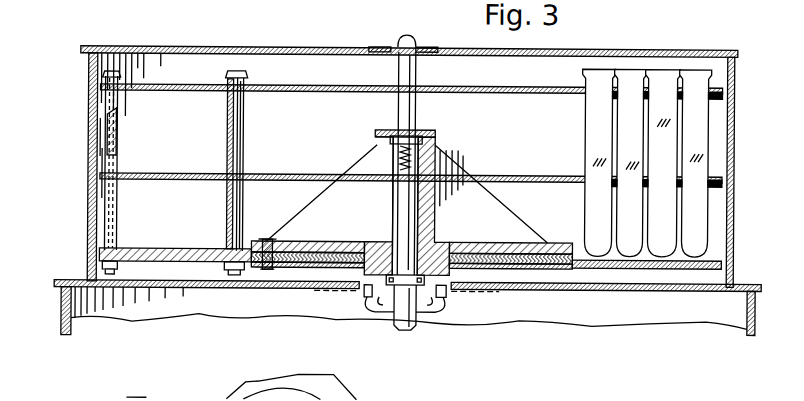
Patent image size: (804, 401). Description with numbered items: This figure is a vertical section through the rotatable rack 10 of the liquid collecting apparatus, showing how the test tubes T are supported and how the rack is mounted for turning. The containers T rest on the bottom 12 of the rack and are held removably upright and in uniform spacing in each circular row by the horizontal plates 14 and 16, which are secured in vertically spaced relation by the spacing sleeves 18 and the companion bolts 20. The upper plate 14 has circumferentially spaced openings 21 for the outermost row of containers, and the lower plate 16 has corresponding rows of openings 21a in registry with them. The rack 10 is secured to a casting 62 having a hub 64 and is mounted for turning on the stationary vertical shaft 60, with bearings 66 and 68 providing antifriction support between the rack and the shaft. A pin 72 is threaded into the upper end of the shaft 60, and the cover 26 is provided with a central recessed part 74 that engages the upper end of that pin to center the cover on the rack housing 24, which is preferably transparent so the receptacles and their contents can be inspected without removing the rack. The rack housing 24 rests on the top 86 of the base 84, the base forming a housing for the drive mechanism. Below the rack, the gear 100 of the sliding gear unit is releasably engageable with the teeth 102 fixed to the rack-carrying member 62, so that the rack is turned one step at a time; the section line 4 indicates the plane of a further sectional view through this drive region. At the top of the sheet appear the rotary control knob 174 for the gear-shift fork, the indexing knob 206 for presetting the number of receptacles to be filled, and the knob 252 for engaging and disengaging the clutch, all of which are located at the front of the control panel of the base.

The section line 4 is at (320, 294).
The rotatable rack 10 is at (163, 247).
The bottom of the rack 12 is at (628, 270).
The upper horizontal plate 14 is at (172, 84).
The lower horizontal plate 16 is at (167, 173).
The spacing sleeves 18 is at (105, 200).
The bolts 20 is at (110, 135).
The openings in upper plate 21 is at (706, 93).
The openings in lower plate 21a is at (706, 196).
The rack housing 24 is at (85, 102).
The cover 26 is at (680, 50).
The stationary vertical shaft 60 is at (403, 318).
The casting 62 is at (520, 213).
The hub 64 is at (433, 177).
The bearing 66 is at (410, 130).
The bearing 68 is at (423, 303).
The pin 72 is at (417, 79).
The central recessed part 74 is at (413, 41).
The base 84 is at (61, 313).
The top of base housing 86 is at (740, 285).
The gear 100 is at (384, 297).
The teeth 102 is at (368, 297).
The rotary control knob 174 is at (403, 0).
The indexing knob 206 is at (368, 16).
The knob 252 is at (193, 5).
The test tubes T is at (640, 140).